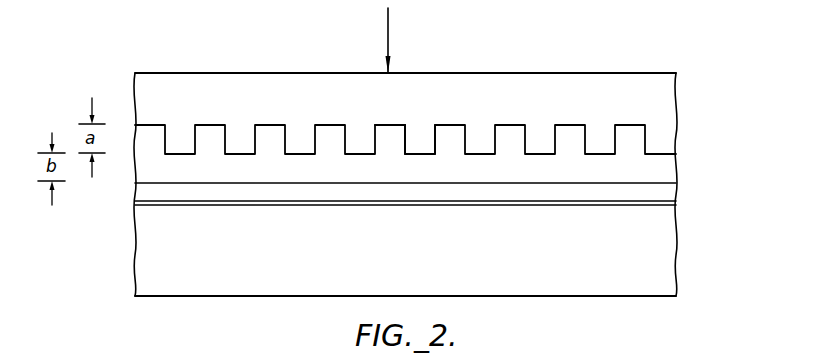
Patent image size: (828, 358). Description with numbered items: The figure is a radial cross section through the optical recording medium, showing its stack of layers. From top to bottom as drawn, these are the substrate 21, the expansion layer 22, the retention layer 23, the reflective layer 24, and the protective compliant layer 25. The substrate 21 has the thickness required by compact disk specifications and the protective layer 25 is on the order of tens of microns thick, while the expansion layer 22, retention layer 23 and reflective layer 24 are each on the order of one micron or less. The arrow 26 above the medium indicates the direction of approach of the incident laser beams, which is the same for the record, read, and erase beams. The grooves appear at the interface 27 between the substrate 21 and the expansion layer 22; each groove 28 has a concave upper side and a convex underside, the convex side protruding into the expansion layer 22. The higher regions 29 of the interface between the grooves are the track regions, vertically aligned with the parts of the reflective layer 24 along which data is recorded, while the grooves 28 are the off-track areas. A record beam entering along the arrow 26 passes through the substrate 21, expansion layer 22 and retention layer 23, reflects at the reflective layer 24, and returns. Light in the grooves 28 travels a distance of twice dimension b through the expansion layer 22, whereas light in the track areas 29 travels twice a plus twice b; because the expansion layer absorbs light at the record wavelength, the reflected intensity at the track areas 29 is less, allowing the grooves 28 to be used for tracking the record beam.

The substrate 21 is at (656, 101).
The expansion layer 22 is at (657, 170).
The retention layer 23 is at (655, 194).
The reflective layer 24 is at (660, 205).
The protective compliant layer 25 is at (658, 243).
The arrow 26 is at (390, 35).
The interface 27 is at (660, 153).
The groove 28 is at (423, 140).
The higher regions 29 is at (398, 124).